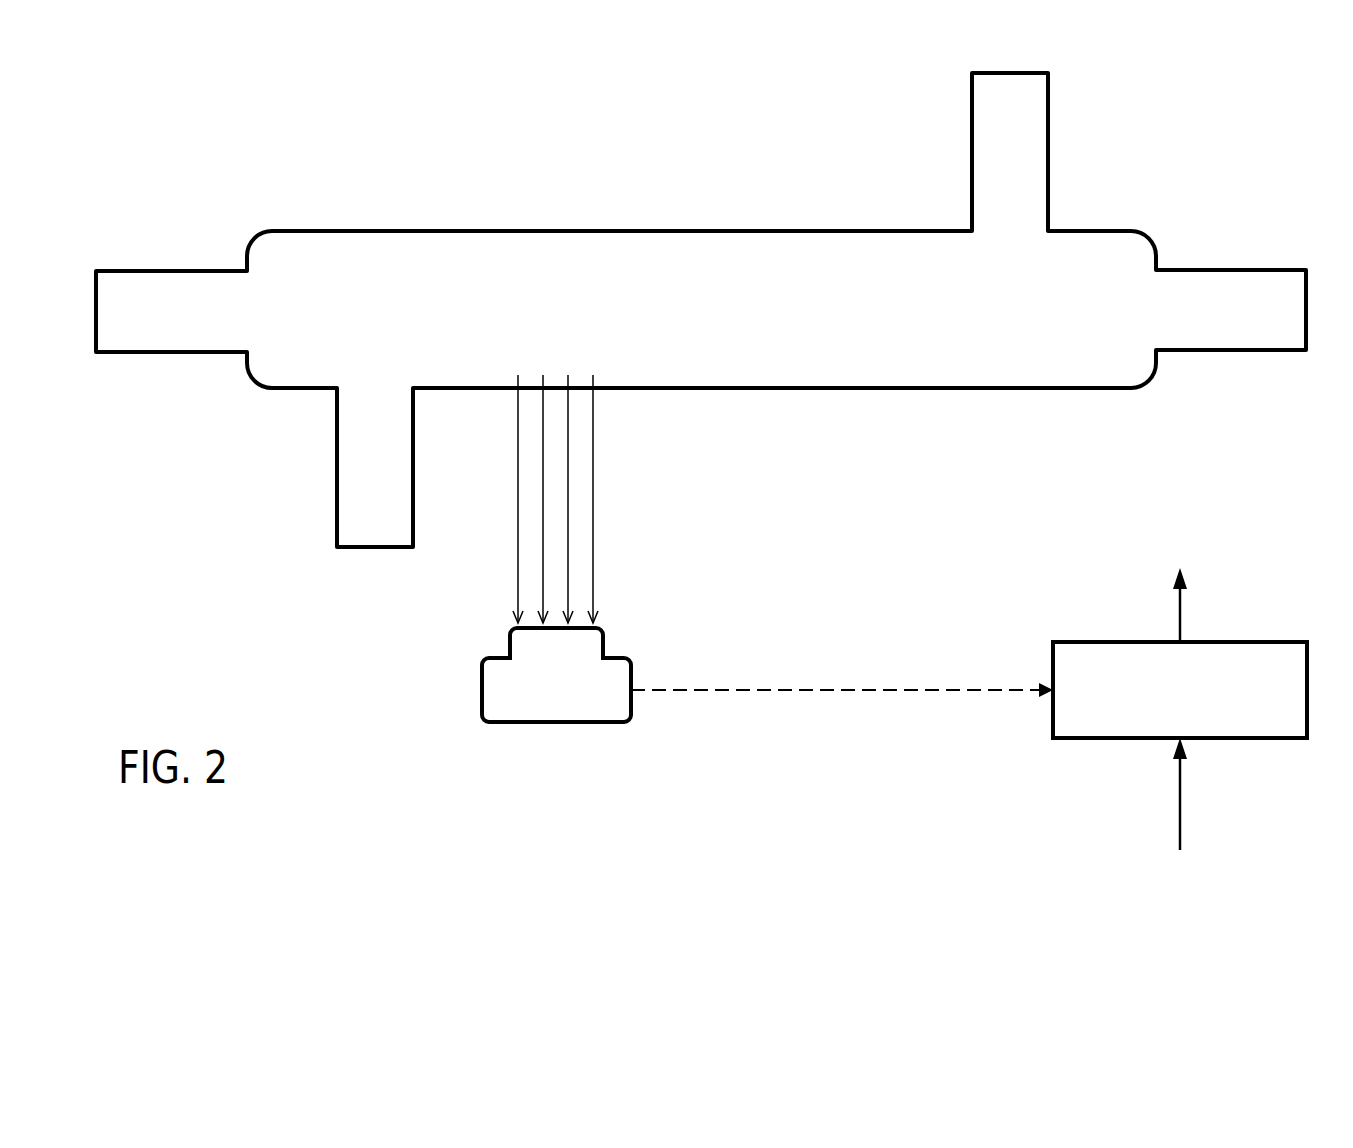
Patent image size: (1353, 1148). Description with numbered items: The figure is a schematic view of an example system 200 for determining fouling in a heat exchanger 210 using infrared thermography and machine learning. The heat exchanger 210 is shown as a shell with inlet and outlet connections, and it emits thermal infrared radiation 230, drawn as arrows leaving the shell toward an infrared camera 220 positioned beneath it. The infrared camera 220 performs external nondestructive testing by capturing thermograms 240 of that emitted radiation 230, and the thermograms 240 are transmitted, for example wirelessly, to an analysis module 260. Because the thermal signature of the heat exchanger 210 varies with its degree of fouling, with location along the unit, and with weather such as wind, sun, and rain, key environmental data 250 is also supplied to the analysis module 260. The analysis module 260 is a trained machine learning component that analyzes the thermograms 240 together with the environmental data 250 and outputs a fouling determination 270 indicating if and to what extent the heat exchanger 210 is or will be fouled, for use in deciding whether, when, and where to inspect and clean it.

The system 200 is at (177, 593).
The heat exchanger 210 is at (697, 230).
The infrared camera 220 is at (557, 723).
The infrared radiation 230 is at (684, 499).
The thermograms 240 is at (842, 689).
The environmental data 250 is at (1179, 836).
The analysis module 260 is at (1205, 725).
The fouling determination 270 is at (1180, 542).